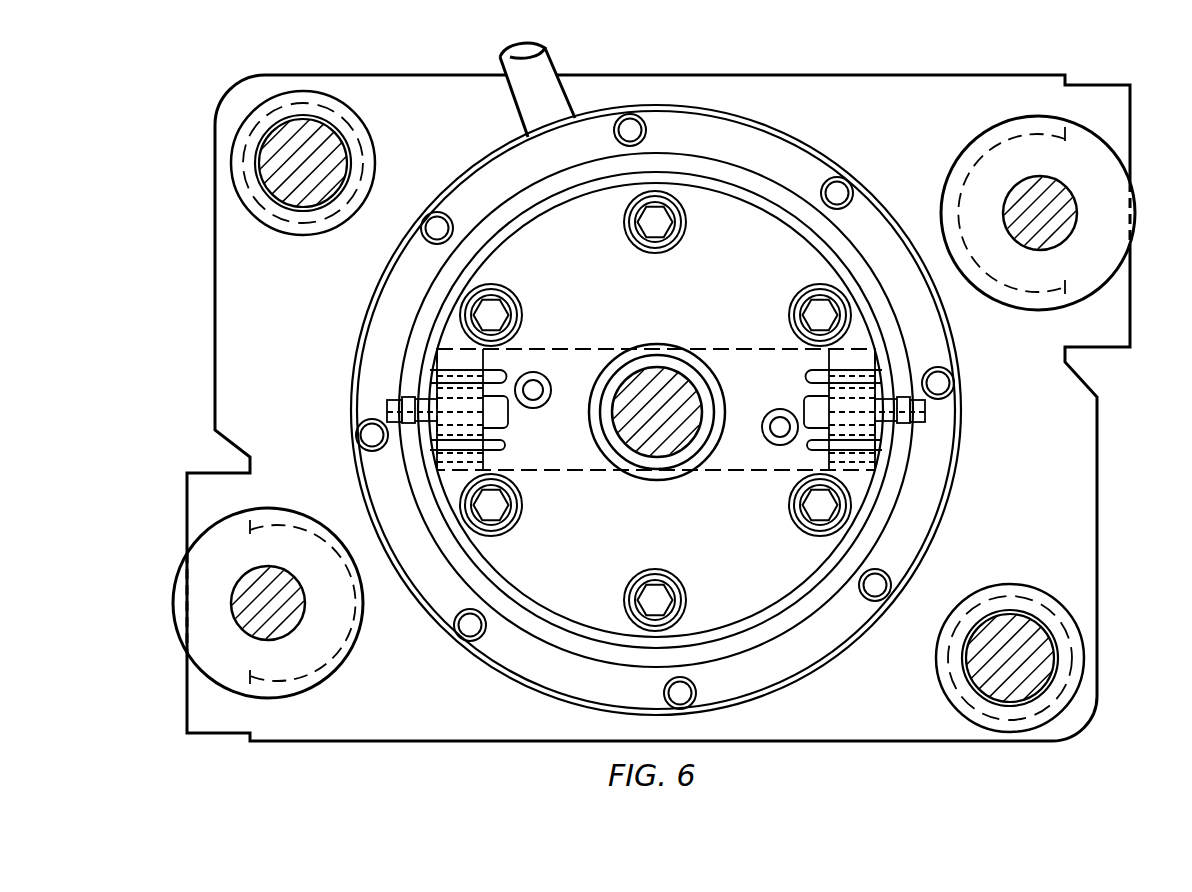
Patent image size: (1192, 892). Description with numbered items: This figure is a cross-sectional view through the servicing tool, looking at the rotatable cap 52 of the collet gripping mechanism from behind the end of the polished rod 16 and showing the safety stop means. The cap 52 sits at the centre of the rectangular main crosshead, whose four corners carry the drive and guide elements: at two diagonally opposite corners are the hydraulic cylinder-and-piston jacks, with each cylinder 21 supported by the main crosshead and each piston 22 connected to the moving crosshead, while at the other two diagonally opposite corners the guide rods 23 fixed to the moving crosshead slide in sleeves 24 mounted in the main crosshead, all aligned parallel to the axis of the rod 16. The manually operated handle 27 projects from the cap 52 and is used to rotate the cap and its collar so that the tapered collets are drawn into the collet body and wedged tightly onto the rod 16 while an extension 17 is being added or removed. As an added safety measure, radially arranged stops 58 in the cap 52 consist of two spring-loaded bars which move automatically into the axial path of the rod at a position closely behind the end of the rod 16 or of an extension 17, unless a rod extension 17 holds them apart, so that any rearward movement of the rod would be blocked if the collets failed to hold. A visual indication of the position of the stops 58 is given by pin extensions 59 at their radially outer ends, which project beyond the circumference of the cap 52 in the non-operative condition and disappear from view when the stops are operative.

The polished rod 16 is at (676, 430).
The rod extension piece 17 is at (663, 447).
The hydraulic drive cylinder 21 is at (200, 585).
The hydraulic drive piston 22 is at (1062, 192).
The guide rod 23 is at (270, 184).
The sleeve 24 is at (262, 124).
The handle 27 is at (553, 63).
The rotatable cap 52 is at (735, 210).
The stop 58 is at (563, 468).
The pin extension 59 is at (387, 410).